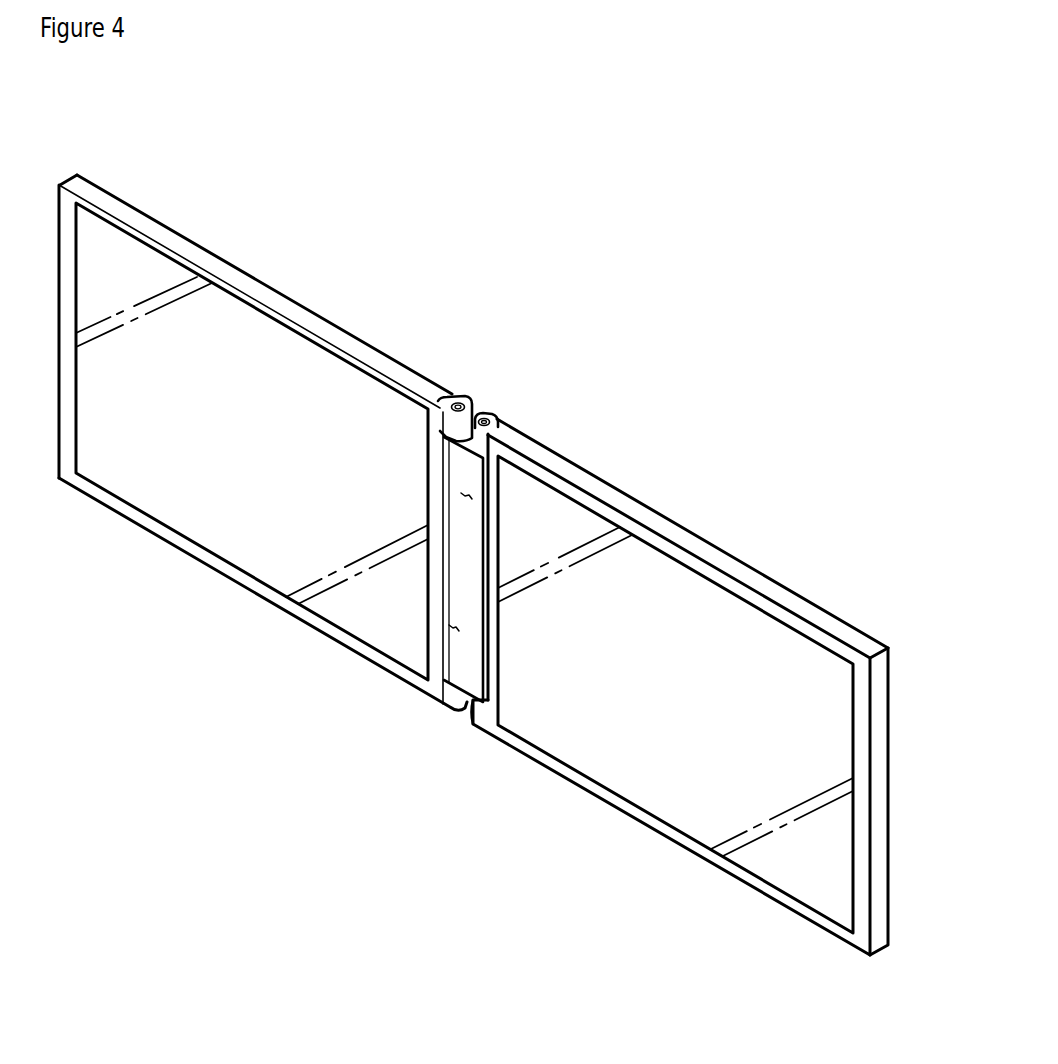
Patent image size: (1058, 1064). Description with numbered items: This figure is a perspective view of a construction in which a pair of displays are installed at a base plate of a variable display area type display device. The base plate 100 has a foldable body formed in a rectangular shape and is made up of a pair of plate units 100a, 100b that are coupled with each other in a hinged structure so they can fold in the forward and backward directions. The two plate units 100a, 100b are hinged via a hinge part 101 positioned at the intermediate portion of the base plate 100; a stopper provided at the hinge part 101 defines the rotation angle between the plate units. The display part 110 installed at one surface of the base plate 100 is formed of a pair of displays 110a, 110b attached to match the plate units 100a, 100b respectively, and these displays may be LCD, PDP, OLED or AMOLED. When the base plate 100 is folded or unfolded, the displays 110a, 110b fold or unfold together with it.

The base plate 100 is at (473, 565).
The plate unit 100a is at (387, 663).
The plate unit 100b is at (634, 687).
The hinge part 101 is at (496, 330).
The display part 110 is at (627, 479).
The display 110a is at (465, 393).
The display 110b is at (588, 518).